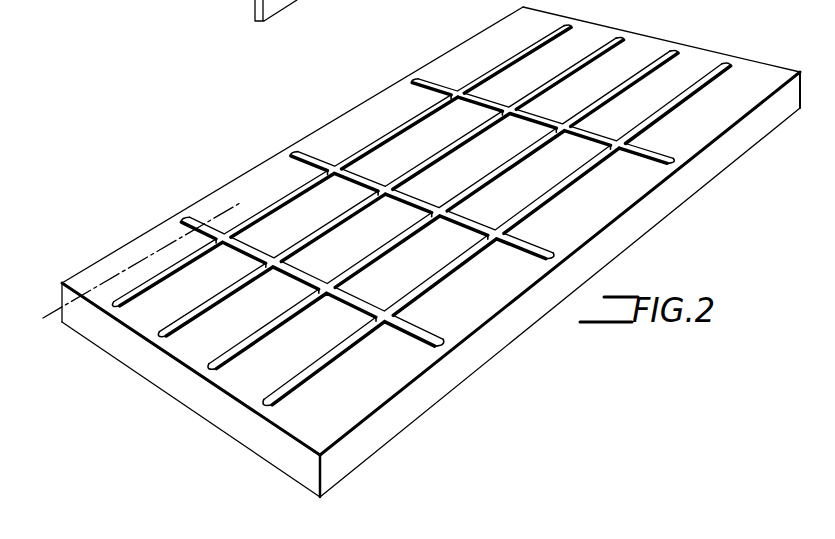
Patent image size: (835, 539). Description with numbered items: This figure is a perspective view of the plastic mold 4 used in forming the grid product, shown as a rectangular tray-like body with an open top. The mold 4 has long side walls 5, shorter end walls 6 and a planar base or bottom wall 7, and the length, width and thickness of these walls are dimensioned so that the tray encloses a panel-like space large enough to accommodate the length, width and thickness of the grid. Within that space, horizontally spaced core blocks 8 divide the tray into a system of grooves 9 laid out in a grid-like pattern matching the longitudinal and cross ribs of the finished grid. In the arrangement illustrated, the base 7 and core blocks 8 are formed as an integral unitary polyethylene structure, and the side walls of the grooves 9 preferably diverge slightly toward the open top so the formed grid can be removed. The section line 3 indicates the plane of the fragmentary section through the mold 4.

The section line 3- 3 is at (240, 203).
The mold 4 is at (270, 140).
The long side walls 5 is at (332, 121).
The end walls 6 is at (667, 42).
The base 7 is at (263, 462).
The core blocks 8 is at (413, 162).
The grooves 9 is at (357, 214).